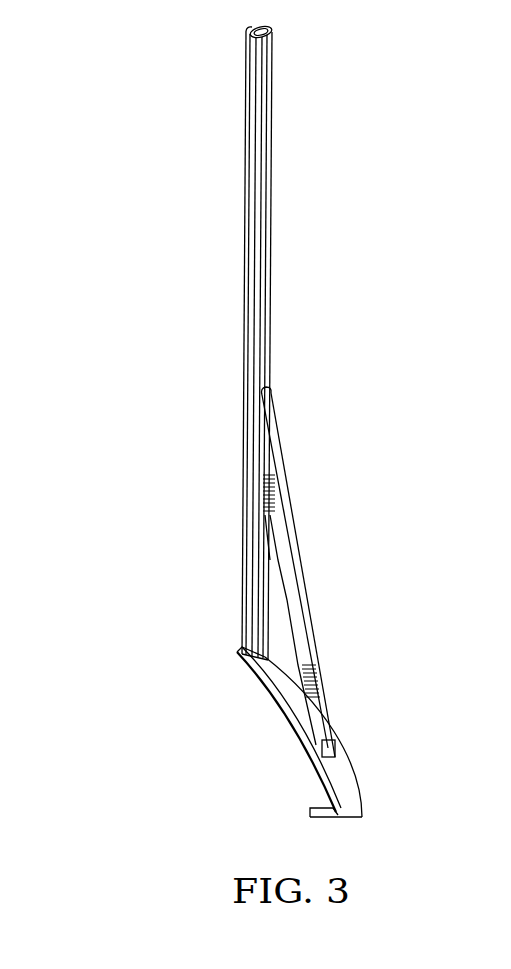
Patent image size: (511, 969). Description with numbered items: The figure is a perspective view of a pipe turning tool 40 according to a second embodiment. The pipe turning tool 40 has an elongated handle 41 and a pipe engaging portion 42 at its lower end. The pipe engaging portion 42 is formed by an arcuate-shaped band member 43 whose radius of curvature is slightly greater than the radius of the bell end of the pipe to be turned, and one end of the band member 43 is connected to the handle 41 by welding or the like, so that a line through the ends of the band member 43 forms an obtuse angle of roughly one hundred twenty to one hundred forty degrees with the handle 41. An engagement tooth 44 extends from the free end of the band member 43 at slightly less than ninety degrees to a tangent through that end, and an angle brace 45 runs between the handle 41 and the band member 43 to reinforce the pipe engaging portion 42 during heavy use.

The pipe turning tool 40 is at (205, 405).
The elongated handle 41 is at (245, 210).
The pipe engaging portion 42 is at (331, 738).
The arcuate-shaped band member 43 is at (290, 706).
The engagement tooth 44 is at (326, 817).
The angle brace 45 is at (297, 543).